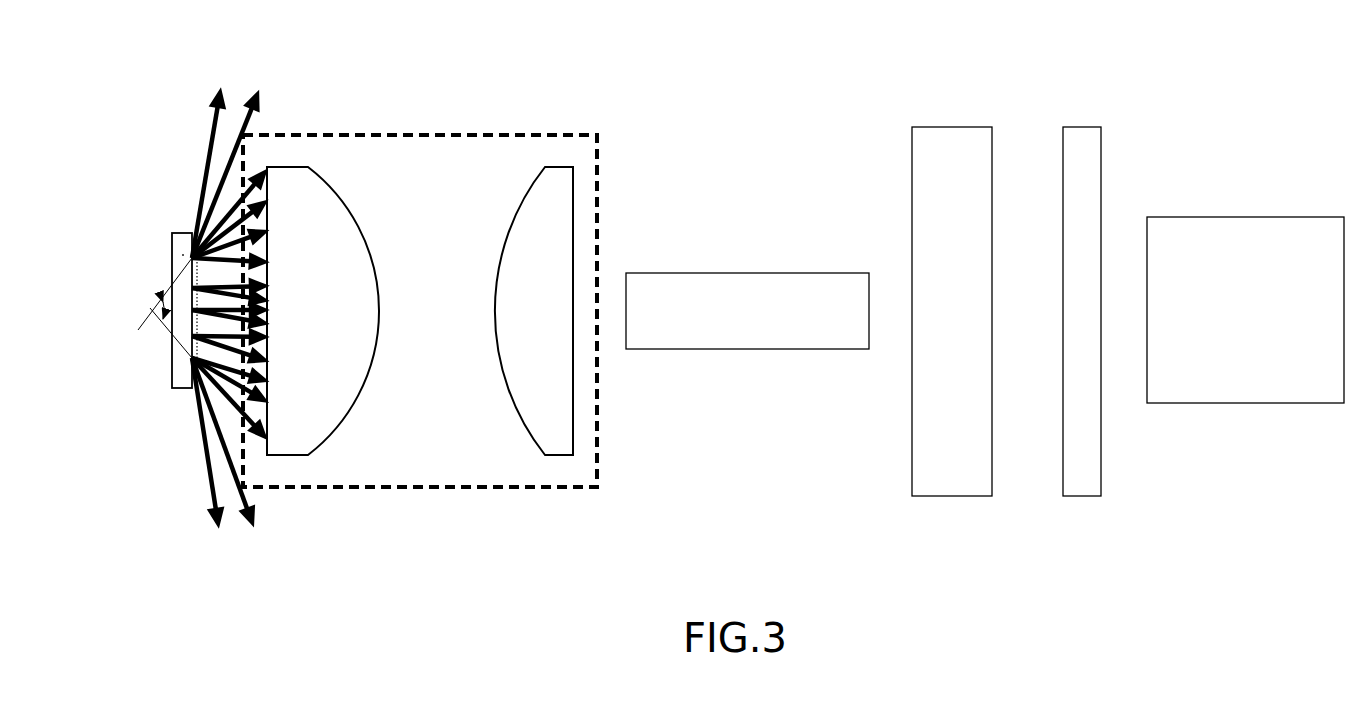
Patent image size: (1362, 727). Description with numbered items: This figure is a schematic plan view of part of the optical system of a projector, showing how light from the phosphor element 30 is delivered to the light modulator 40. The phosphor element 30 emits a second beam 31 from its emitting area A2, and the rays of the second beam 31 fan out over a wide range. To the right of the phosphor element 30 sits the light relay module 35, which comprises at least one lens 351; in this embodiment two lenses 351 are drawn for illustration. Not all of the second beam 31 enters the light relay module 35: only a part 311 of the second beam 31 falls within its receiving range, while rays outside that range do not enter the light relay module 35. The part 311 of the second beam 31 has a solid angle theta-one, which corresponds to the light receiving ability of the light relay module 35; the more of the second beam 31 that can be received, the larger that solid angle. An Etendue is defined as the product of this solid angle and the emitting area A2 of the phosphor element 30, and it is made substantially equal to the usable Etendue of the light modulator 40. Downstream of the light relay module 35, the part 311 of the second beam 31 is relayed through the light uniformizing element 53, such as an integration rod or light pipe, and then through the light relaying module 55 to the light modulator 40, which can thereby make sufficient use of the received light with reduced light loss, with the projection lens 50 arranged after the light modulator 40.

The phosphor element 30 is at (168, 258).
The second beam 31 is at (208, 478).
The part of the second beam 311 is at (258, 410).
The light relay module 35 is at (322, 134).
The lens 351 is at (513, 200).
The light uniformizing element 53 is at (712, 270).
The light relaying module 55 is at (945, 126).
The light modulator 40 is at (1080, 126).
The projection lens 50 is at (1210, 216).
The emitting area A2 is at (182, 252).